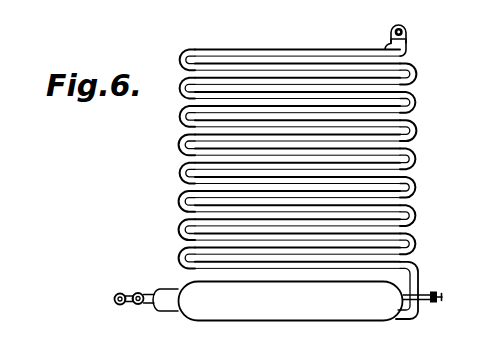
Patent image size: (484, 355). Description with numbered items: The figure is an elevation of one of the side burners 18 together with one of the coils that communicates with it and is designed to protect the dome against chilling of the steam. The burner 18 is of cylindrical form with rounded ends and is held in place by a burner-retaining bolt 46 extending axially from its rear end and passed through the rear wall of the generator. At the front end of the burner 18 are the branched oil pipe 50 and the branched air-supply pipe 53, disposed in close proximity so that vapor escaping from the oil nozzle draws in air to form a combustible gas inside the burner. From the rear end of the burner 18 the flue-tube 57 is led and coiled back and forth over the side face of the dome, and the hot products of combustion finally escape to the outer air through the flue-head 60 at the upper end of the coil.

The flue-tube 57 is at (304, 50).
The flue-head 60 is at (403, 33).
The burner 18 is at (278, 301).
The burner-retaining bolt 46 is at (425, 294).
The branched oil pipe 50 is at (120, 293).
The branched air-supply pipe 53 is at (146, 284).